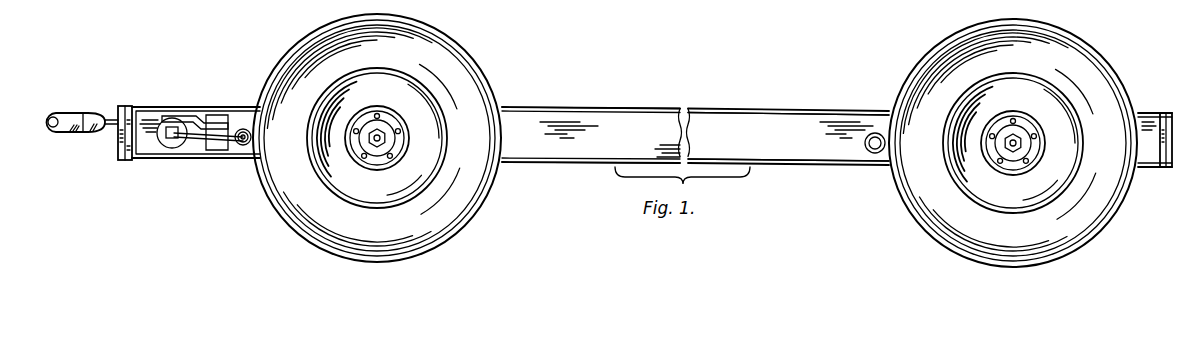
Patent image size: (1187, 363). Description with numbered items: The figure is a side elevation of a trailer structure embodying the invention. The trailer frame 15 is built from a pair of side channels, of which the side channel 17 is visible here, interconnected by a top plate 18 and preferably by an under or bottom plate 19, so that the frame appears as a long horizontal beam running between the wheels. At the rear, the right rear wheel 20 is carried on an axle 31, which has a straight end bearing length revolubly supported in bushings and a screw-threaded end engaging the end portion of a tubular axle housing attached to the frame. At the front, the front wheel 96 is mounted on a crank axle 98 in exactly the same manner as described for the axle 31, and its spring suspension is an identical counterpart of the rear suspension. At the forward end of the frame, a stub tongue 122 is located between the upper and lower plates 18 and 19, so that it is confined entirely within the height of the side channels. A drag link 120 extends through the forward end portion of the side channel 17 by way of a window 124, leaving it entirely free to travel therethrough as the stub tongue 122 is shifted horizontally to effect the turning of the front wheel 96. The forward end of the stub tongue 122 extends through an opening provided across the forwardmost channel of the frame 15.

The frame 15 is at (700, 105).
The side channel 17 is at (785, 150).
The top plate 18 is at (567, 110).
The bottom plate 19 is at (548, 162).
The right rear wheel 20 is at (965, 227).
The axle 31 is at (879, 133).
The front wheel 96 is at (387, 245).
The crank axle 98 is at (240, 152).
The drag link 120 is at (192, 137).
The stub tongue 122 is at (110, 118).
The window 124 is at (210, 147).